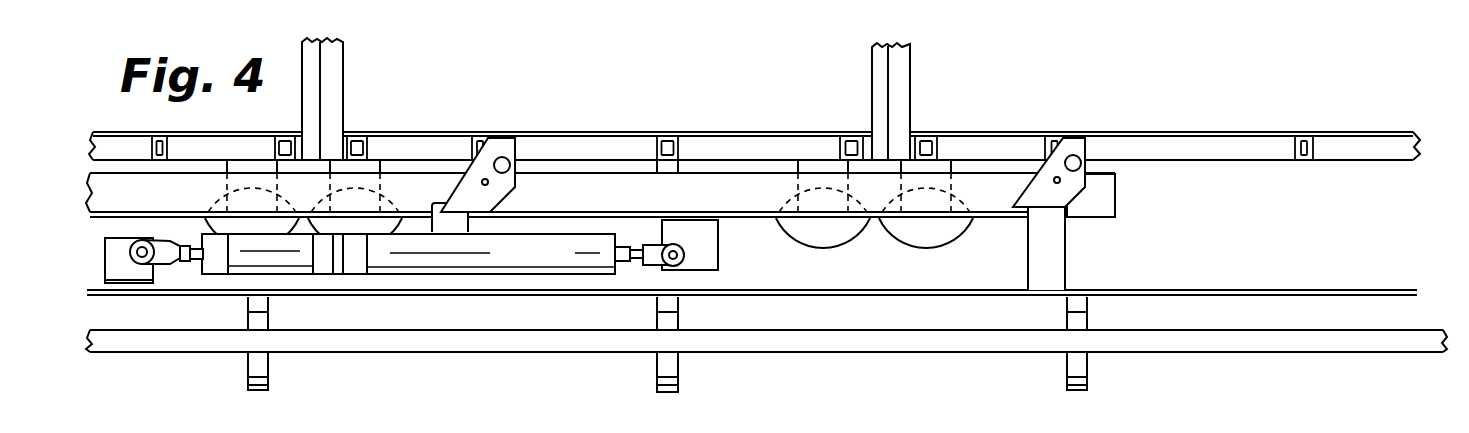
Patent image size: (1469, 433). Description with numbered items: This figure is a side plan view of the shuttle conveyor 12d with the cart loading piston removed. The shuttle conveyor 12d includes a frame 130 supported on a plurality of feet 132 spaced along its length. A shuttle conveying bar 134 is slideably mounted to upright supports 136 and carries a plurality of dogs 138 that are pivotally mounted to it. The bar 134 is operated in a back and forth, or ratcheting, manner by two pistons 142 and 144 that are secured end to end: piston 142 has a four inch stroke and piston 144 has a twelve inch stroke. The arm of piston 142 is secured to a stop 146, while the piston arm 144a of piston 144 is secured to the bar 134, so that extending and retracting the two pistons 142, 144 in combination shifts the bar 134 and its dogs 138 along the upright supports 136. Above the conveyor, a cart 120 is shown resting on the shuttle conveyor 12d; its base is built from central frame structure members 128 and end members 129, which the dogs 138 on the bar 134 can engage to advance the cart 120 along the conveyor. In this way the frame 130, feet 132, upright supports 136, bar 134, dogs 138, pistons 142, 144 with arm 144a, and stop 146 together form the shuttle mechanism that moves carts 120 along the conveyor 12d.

The shuttle conveyor 12d is at (697, 98).
The cart 120 is at (350, 62).
The central frame structure members 128 is at (643, 145).
The end members 129 is at (368, 133).
The frame 130 is at (490, 342).
The feet 132 is at (679, 378).
The shuttle conveying bar 134 is at (1115, 200).
The upright supports 136 is at (1048, 258).
The dogs 138 is at (492, 190).
The piston 142 is at (280, 257).
The piston 144 is at (505, 254).
The piston arm 144a is at (650, 267).
The stop 146 is at (123, 273).